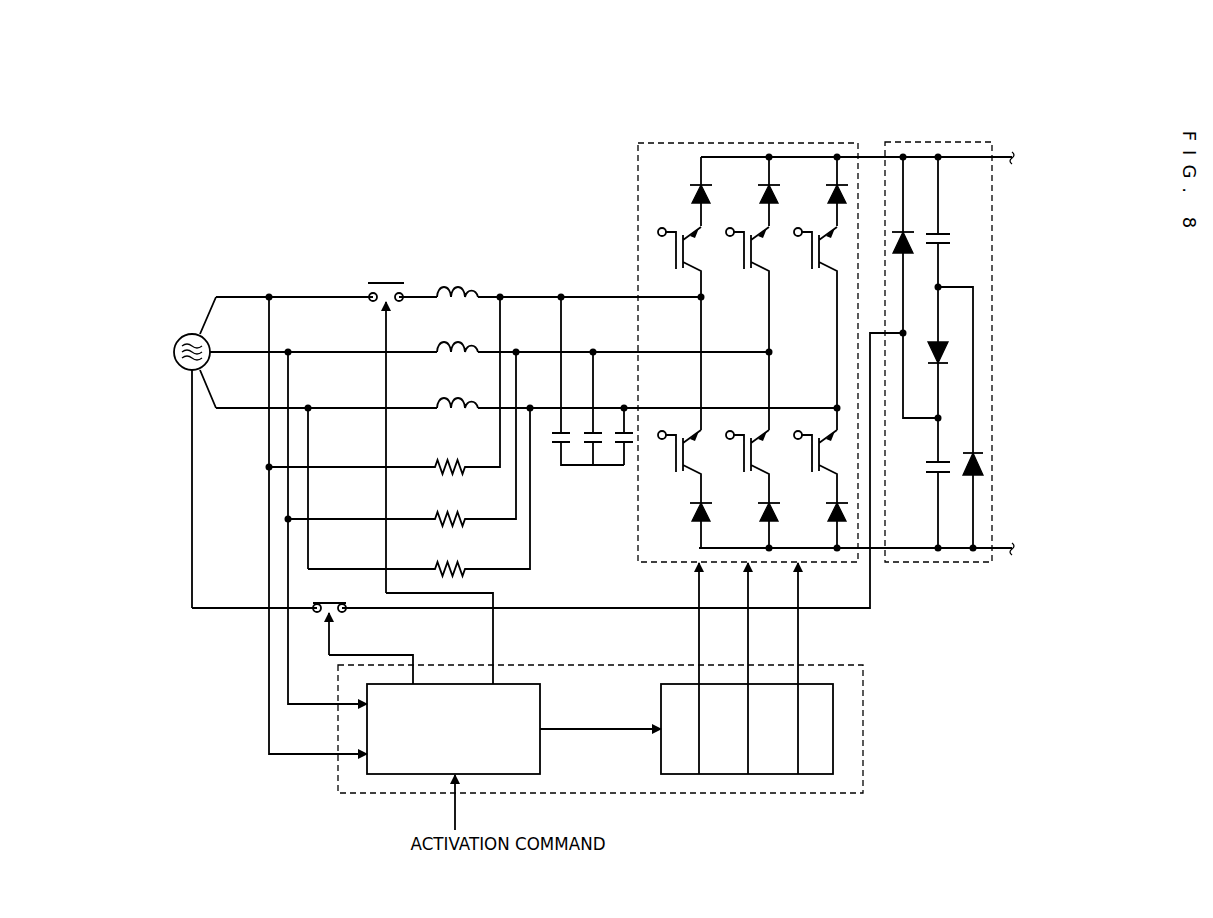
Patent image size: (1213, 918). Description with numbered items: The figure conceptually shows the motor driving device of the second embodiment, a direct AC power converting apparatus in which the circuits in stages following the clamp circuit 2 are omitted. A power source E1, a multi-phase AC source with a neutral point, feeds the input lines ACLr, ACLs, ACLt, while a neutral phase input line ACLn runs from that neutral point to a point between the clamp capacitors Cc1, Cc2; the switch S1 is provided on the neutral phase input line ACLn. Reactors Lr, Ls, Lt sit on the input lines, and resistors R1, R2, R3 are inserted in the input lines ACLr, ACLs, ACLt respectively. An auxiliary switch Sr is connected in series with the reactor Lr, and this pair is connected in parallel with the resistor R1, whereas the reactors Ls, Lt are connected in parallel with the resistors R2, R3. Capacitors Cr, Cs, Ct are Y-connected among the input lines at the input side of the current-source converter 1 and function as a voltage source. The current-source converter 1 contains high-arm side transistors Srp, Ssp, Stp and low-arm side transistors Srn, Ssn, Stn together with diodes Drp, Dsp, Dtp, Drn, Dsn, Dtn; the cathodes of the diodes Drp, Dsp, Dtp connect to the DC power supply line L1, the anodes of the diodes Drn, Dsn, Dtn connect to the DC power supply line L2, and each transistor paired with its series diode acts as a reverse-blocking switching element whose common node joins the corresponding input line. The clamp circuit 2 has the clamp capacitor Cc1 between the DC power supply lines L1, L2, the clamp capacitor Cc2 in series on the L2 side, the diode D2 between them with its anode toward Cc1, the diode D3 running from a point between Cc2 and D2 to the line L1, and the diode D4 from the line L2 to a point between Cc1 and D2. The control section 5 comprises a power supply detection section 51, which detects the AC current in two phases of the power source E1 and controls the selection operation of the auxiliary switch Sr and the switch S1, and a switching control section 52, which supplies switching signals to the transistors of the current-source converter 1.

The current-source converter 1 is at (680, 142).
The clamp circuit 2 is at (943, 141).
The control section 5 is at (830, 796).
The power supply detection section 51 is at (516, 776).
The switching control section 52 is at (763, 776).
The DC power supply line L1 is at (873, 153).
The DC power supply line L2 is at (917, 564).
The power source E1 is at (194, 332).
The input line ACLr is at (233, 292).
The input line ACLs is at (236, 348).
The input line ACLt is at (228, 412).
The neutral phase input line ACLn is at (189, 533).
The auxiliary switch Sr is at (386, 281).
The switch S1 is at (340, 601).
The reactor Lr is at (458, 285).
The reactor Ls is at (458, 340).
The reactor Lt is at (458, 396).
The resistor R1 is at (452, 458).
The resistor R2 is at (452, 510).
The resistor R3 is at (452, 561).
The capacitor Cr is at (560, 446).
The capacitor Cs is at (591, 446).
The capacitor Ct is at (622, 446).
The diode Drp is at (690, 195).
The diode Dsp is at (758, 195).
The diode Dtp is at (826, 195).
The diode Drn is at (694, 511).
The diode Dsn is at (762, 511).
The diode Dtn is at (830, 511).
The high-arm side transistor Srp is at (678, 251).
The high-arm side transistor Ssp is at (745, 279).
The high-arm side transistor Stp is at (814, 307).
The low-arm side transistor Srn is at (679, 400).
The low-arm side transistor Ssn is at (746, 427).
The low-arm side transistor Stn is at (815, 455).
The diode D2 is at (939, 340).
The diode D3 is at (907, 256).
The diode D4 is at (972, 451).
The clamp capacitor Cc1 is at (942, 231).
The clamp capacitor Cc2 is at (933, 474).